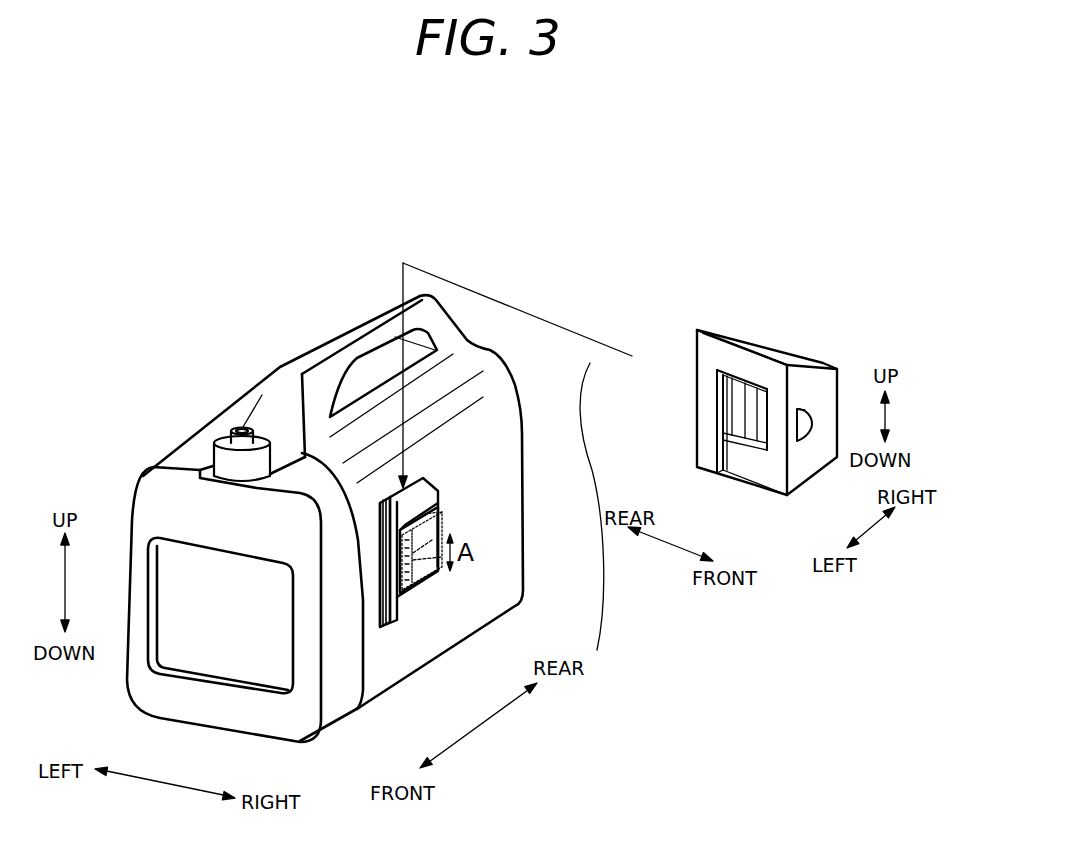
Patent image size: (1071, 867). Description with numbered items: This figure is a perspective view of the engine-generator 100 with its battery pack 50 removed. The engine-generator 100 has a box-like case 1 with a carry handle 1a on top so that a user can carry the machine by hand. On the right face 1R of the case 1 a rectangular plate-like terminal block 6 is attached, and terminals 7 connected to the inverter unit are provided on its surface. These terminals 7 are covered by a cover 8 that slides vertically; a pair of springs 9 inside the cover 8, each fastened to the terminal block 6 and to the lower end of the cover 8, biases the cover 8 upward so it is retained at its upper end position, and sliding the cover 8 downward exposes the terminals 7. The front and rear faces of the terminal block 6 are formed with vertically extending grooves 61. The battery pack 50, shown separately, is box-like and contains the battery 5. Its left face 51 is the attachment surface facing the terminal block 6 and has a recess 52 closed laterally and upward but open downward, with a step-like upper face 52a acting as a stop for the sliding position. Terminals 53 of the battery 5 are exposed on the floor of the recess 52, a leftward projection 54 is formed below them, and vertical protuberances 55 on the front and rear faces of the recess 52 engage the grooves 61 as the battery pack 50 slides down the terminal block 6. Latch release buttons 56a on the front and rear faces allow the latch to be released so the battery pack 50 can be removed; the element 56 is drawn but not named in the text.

The case 1 is at (484, 604).
The carry handle 1a is at (337, 341).
The right face 1R is at (483, 530).
The engine-generator 100 is at (593, 255).
The terminal block 6 is at (402, 604).
The grooves 61 is at (383, 592).
The terminals 7 is at (445, 575).
The cover 8 is at (422, 572).
The springs 9 is at (433, 497).
The battery pack 50 is at (748, 323).
The battery 5 is at (787, 357).
The left face 51 is at (708, 443).
The recess 52 is at (753, 478).
The upper face of the recess 52a is at (720, 378).
The terminals 53 is at (735, 404).
The projection 54 is at (733, 470).
The protuberances 55 is at (722, 472).
The hole 56 is at (813, 413).
The latch release buttons 56a is at (808, 418).